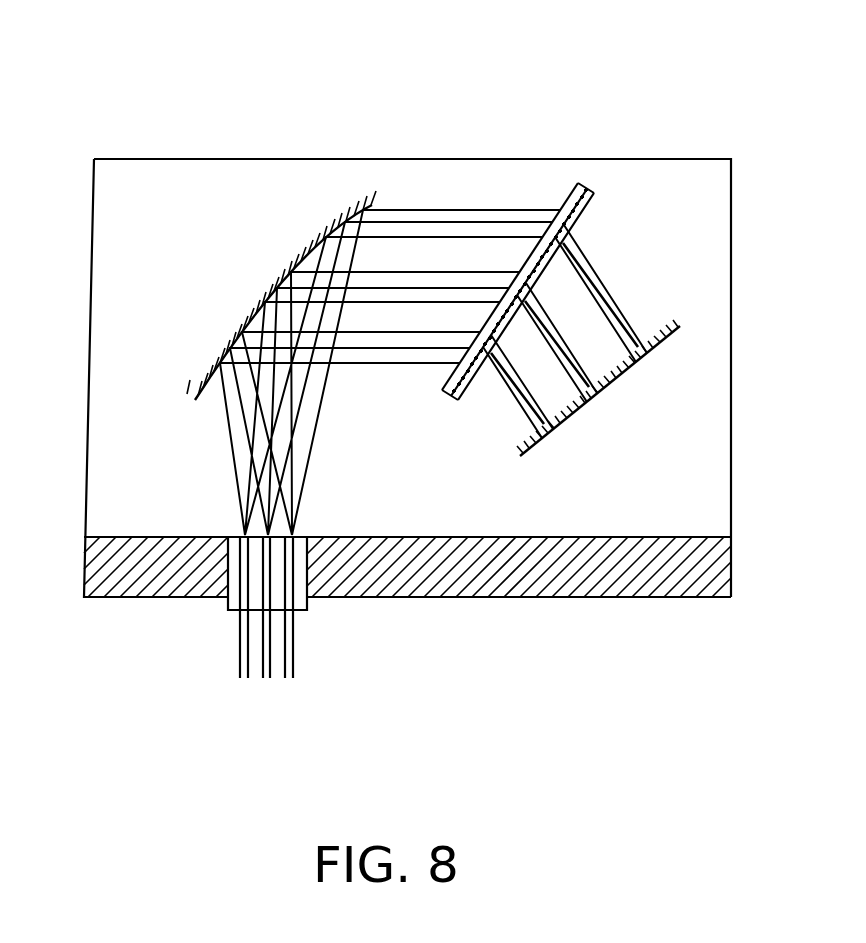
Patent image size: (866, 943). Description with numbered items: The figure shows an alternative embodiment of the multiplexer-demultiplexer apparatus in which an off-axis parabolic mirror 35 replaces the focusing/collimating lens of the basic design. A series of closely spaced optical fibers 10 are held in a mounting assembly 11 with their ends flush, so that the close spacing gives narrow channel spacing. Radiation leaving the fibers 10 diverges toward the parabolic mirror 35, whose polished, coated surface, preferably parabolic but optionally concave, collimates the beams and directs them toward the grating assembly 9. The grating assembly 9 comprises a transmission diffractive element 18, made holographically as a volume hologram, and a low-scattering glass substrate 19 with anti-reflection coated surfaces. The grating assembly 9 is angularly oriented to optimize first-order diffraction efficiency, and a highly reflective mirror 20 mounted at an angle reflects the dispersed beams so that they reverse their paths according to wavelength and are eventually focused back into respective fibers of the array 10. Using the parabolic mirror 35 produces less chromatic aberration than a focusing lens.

The grating assembly 9 is at (573, 180).
The diffractive element 18 is at (593, 183).
The substrate 19 is at (600, 195).
The mirror 20 is at (680, 330).
The off-axis parabolic mirror 35 is at (300, 218).
The optical fiber array 10 is at (298, 638).
The mounting assembly 11 is at (228, 606).